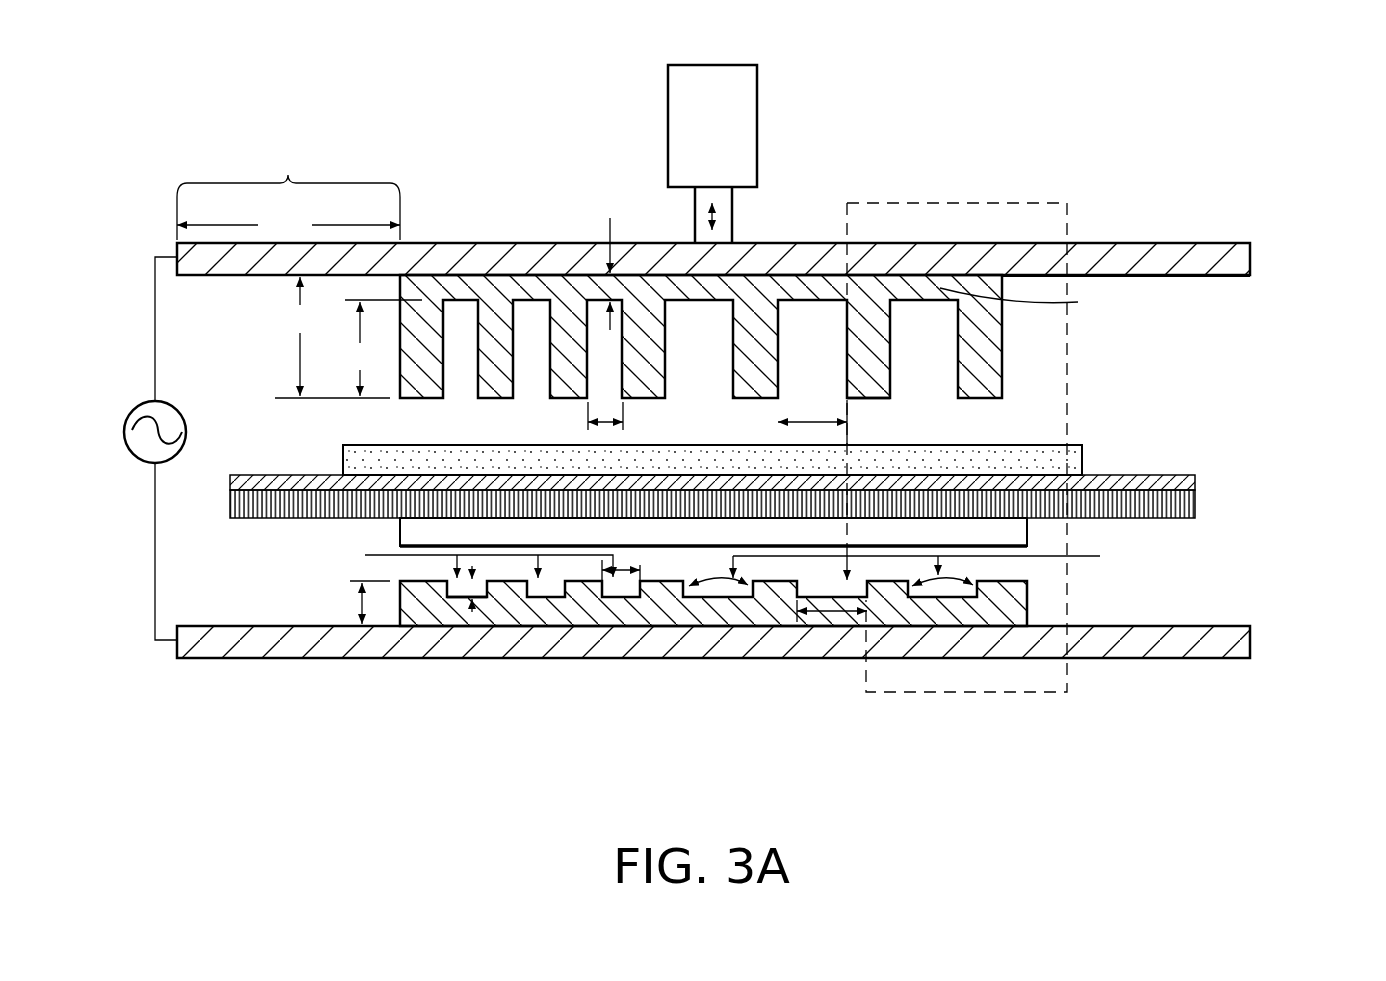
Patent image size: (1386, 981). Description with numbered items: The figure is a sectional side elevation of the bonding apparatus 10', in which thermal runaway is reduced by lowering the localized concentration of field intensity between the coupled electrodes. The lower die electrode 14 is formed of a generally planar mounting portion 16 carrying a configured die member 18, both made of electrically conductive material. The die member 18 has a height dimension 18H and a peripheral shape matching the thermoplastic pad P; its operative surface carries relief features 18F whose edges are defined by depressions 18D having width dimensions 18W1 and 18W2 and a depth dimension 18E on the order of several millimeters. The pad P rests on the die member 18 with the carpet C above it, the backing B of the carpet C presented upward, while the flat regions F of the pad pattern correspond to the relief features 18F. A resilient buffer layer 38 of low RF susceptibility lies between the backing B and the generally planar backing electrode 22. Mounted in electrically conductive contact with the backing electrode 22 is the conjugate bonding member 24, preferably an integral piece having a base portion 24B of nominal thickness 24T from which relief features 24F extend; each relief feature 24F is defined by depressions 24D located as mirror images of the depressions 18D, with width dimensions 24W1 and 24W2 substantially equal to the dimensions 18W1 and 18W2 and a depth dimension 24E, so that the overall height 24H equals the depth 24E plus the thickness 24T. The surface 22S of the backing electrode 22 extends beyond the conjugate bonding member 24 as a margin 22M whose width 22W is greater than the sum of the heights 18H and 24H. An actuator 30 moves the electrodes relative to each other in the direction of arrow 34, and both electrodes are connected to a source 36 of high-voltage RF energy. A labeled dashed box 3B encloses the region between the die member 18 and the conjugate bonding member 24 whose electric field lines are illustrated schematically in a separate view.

The bonding apparatus 10' is at (1025, 74).
The backing electrode 22 is at (1252, 258).
The lower surface of upper electrode 22S is at (1210, 277).
The margin 22M is at (288, 194).
The width dimension 22W is at (288, 227).
The conjugate bonding member 24 is at (1003, 342).
The base portion 24B is at (1031, 301).
The nominal thickness 24T is at (610, 218).
The overall height dimension 24H is at (299, 336).
The depth dimension 24E is at (348, 349).
The width dimension 24W1 is at (782, 422).
The width dimension 24W2 is at (588, 422).
The relief feature 24F is at (858, 399).
The depressions 24D is at (927, 362).
The actuator 30 is at (757, 143).
The directional arrow 34 is at (733, 213).
The source of high voltage RF energy 36 is at (178, 455).
The resilient buffer layer 38 is at (1084, 457).
The labeled dashed box 3B is at (1018, 203).
The backing B is at (1197, 481).
The flat regions F is at (1243, 470).
The thermoplastic carpet C is at (753, 496).
The thermoplastic pad P is at (1030, 528).
The die member 18 is at (1028, 592).
The depressions 18D is at (735, 577).
The height dimension 18H is at (358, 603).
The depth dimension 18E is at (470, 596).
The width dimension 18W1 is at (827, 611).
The width dimension 18W2 is at (626, 568).
The relief features 18F is at (723, 580).
The die electrode 14 is at (764, 615).
The mounting portion 16 is at (739, 640).